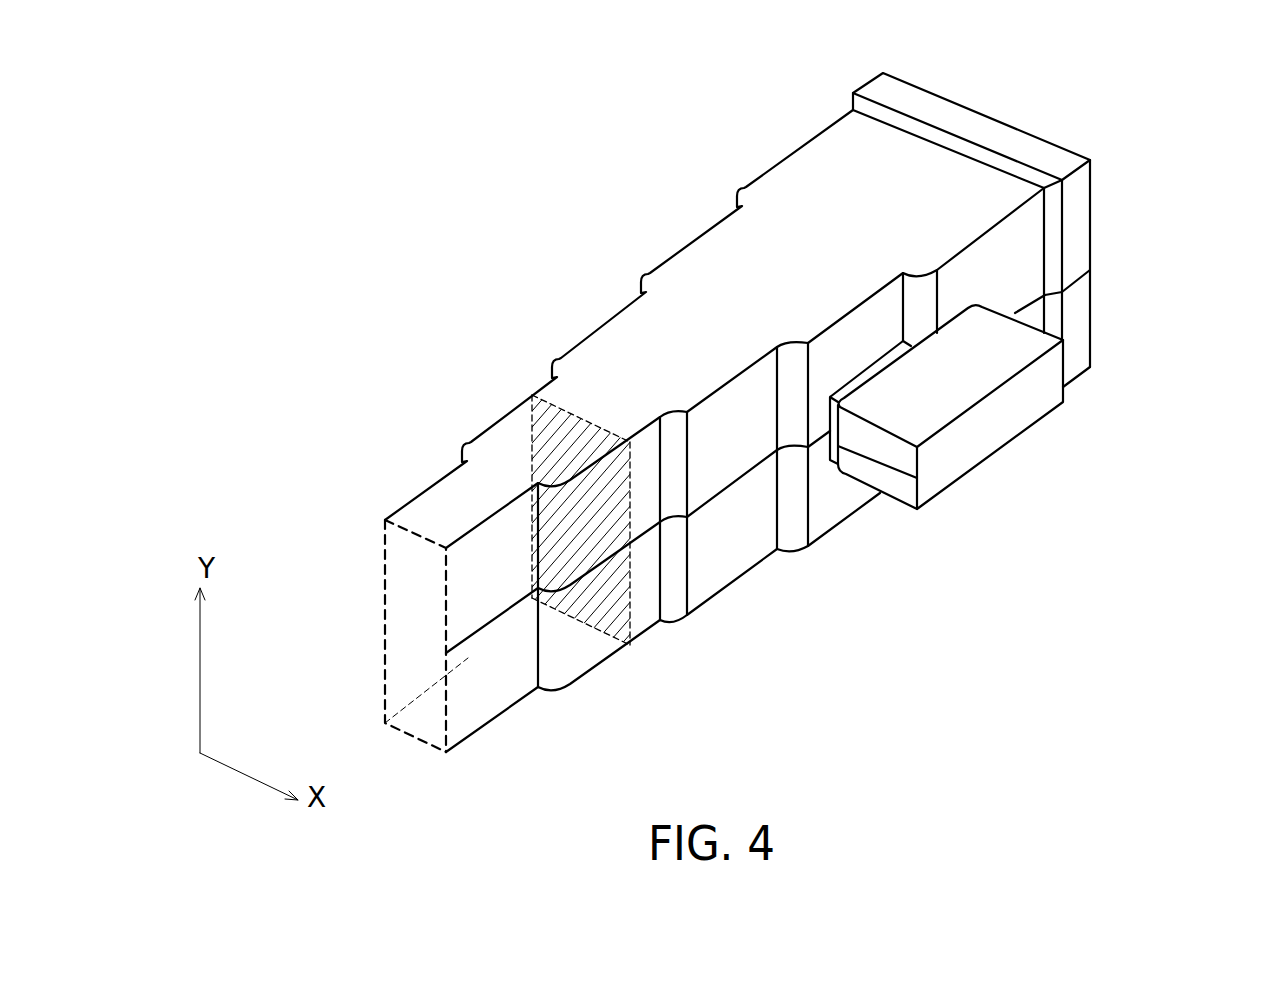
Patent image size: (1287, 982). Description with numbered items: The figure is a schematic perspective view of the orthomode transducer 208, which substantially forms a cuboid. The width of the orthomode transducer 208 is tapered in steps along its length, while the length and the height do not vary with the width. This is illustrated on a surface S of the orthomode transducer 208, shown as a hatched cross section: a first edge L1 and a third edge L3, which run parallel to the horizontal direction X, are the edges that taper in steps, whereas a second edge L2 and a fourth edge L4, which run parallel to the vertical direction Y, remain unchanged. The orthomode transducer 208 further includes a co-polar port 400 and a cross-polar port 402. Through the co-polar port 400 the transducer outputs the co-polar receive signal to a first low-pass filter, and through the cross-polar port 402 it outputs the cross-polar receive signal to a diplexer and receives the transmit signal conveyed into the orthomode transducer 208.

The orthomode transducer 208 is at (1145, 90).
The co-polar port 400 is at (1030, 413).
The cross-polar port 402 is at (497, 697).
The surface S is at (567, 527).
The first edge L1 is at (580, 413).
The second edge L2 is at (632, 585).
The third edge L3 is at (577, 623).
The fourth edge L4 is at (530, 470).